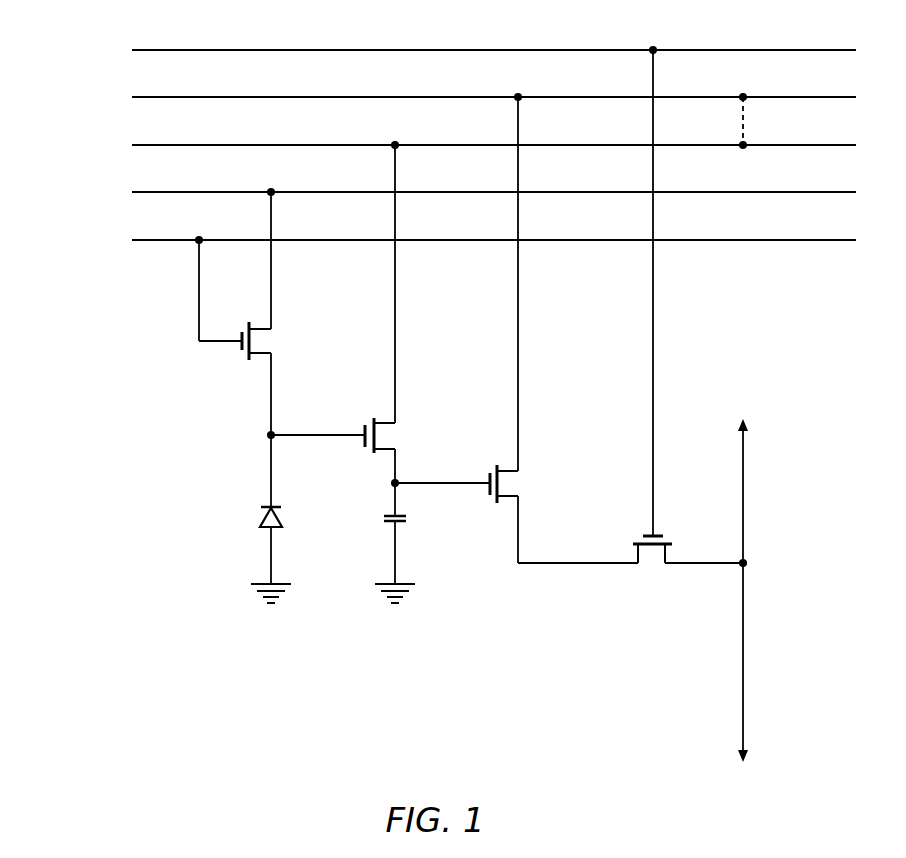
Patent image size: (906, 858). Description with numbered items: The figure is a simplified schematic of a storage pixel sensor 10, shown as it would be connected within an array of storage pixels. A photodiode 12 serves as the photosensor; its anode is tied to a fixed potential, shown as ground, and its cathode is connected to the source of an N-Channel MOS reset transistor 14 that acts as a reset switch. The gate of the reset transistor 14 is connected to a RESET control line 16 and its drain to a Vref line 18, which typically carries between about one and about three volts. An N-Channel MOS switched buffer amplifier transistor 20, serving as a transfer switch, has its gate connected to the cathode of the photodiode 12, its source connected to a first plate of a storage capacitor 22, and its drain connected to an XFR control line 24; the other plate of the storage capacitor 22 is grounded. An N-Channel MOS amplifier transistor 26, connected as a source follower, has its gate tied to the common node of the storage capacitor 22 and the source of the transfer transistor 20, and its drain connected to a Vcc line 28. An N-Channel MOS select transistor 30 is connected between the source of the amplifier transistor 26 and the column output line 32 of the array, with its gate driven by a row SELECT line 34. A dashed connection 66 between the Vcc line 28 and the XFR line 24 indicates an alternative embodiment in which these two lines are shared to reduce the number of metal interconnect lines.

The storage pixel sensor 10 is at (66, 476).
The photodiode 12 is at (260, 520).
The N-Channel MOS reset transistor 14 is at (267, 340).
The RESET control line 16 is at (176, 240).
The Vref line 18 is at (176, 192).
The N-Channel MOS switched buffer amplifier transistor 20 is at (392, 435).
The storage capacitor 22 is at (405, 517).
The XFR control line 24 is at (228, 145).
The N-Channel MOS amplifier transistor 26 is at (513, 483).
The Vcc line 28 is at (282, 97).
The N-Channel MOS select transistor 30 is at (652, 562).
The column output line 32 is at (743, 531).
The row SELECT line 34 is at (335, 50).
The dashed connection 66 is at (745, 120).